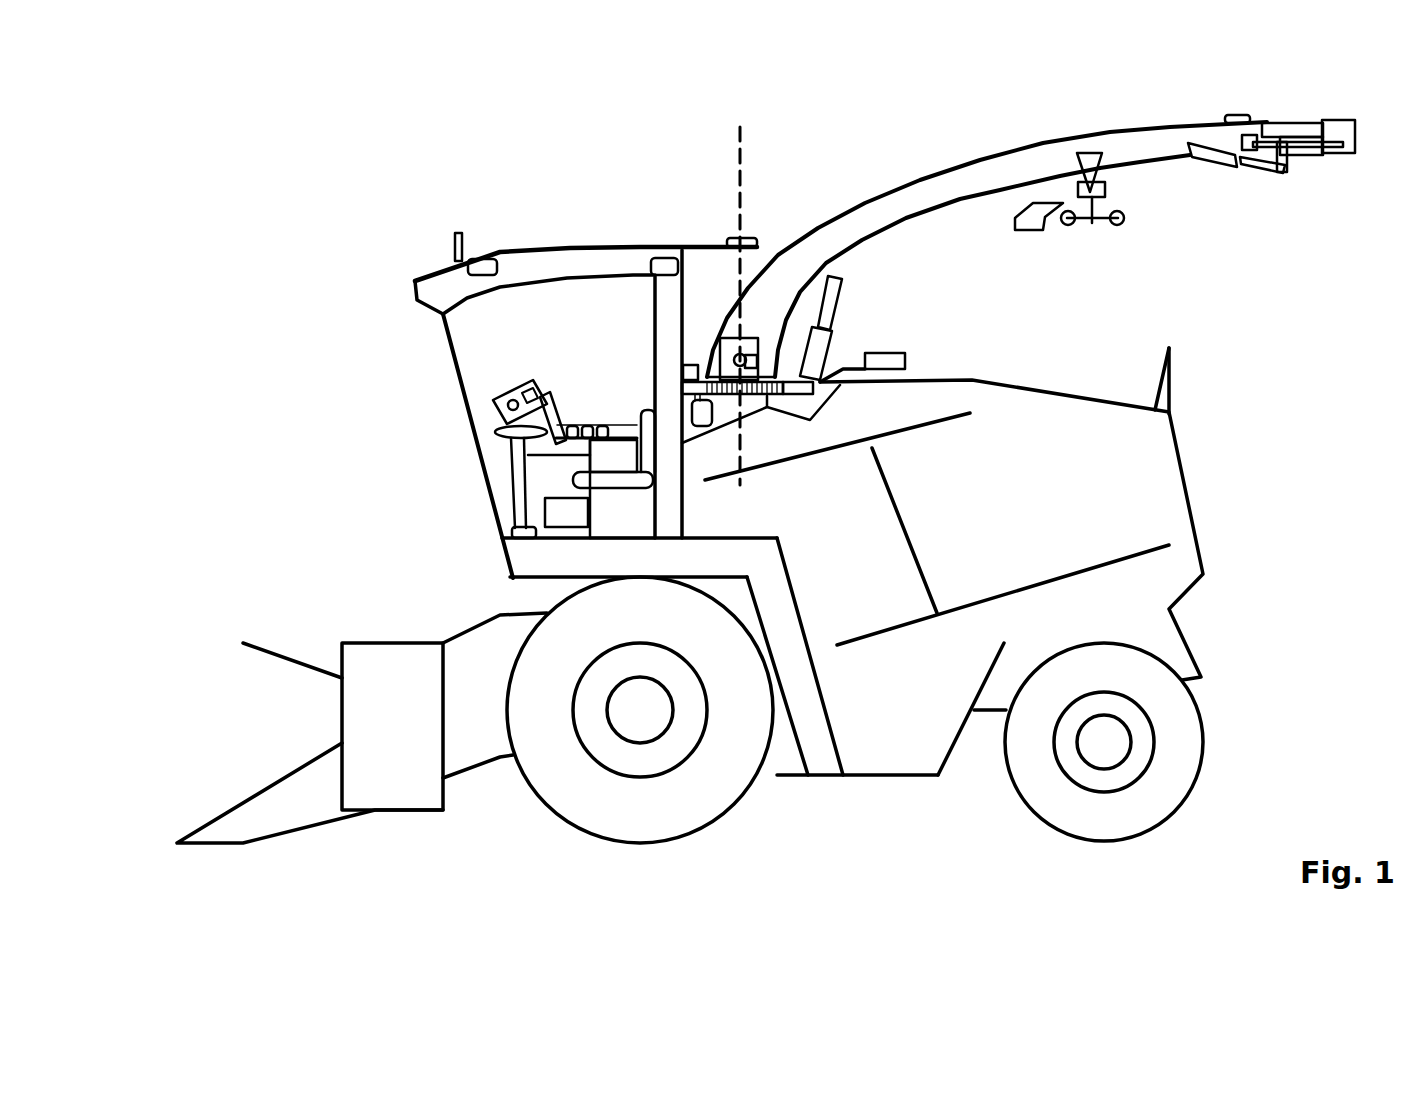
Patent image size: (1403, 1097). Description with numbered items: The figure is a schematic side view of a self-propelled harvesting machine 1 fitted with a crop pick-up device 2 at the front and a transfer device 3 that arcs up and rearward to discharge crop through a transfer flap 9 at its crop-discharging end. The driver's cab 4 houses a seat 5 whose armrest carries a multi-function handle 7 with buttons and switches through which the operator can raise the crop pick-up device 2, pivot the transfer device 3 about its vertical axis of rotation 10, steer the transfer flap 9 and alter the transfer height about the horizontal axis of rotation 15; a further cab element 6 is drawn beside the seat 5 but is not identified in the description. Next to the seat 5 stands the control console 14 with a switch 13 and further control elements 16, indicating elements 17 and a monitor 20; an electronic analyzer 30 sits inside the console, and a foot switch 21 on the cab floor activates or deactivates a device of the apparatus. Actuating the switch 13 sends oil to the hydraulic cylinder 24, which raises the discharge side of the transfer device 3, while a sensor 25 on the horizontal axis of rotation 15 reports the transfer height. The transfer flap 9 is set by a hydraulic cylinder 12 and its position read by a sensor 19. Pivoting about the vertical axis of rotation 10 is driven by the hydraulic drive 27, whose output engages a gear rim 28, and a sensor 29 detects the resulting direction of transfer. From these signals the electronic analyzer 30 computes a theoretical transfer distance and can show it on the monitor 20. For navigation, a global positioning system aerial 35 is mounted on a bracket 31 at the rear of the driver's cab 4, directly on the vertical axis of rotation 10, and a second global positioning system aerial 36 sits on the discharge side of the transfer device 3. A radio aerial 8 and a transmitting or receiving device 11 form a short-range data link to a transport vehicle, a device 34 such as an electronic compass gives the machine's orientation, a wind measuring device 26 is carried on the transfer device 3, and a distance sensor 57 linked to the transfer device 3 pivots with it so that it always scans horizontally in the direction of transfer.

The harvesting machine 1 is at (383, 242).
The crop pick-up device 2 is at (362, 708).
The transfer device 3 is at (935, 196).
The driver's cab 4 is at (470, 323).
The seat 5 is at (634, 513).
The driver's seat 6 is at (602, 463).
The multi-function handle 7 is at (550, 420).
The radio aerial 8 is at (457, 232).
The transfer flap 9 is at (1342, 130).
The vertical axis of rotation 10 is at (745, 238).
The transmitting or receiving device 11 is at (482, 262).
The hydraulic cylinder 12 is at (1208, 150).
The switch 13 is at (578, 425).
The control console 14 is at (545, 478).
The horizontal axis of rotation 15 is at (780, 300).
The control element 16 is at (495, 402).
The indicating elements 17 is at (528, 384).
The sensor 19 is at (1252, 135).
The monitor 20 is at (500, 426).
The foot switch 21 is at (535, 533).
The hydraulic cylinder 24 is at (810, 362).
The sensor 25 is at (757, 396).
The wind measuring device 26 is at (1100, 182).
The hydraulic drive 27 is at (646, 410).
The gear rim 28 is at (668, 320).
The sensor 29 is at (696, 365).
The electronic analyzer 30 is at (545, 500).
The bracket 31 is at (728, 245).
The device for determining orientation 34 is at (665, 258).
The global positioning system aerial 35 is at (835, 278).
The global positioning system aerial 36 is at (1240, 115).
The distance sensor 57 is at (895, 356).